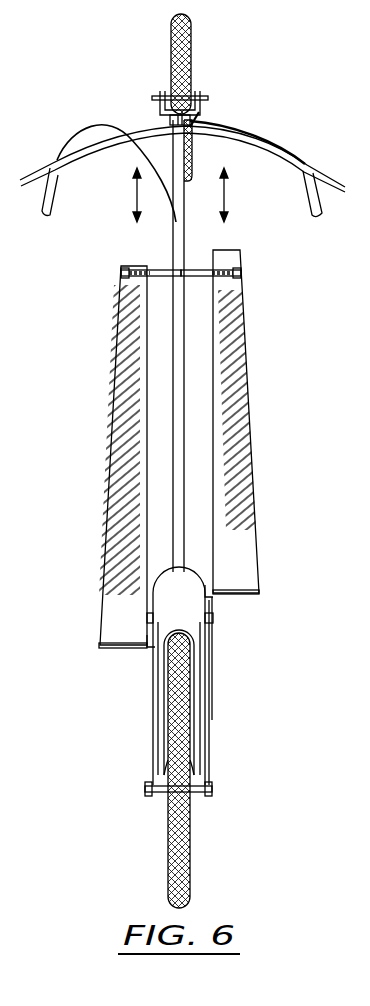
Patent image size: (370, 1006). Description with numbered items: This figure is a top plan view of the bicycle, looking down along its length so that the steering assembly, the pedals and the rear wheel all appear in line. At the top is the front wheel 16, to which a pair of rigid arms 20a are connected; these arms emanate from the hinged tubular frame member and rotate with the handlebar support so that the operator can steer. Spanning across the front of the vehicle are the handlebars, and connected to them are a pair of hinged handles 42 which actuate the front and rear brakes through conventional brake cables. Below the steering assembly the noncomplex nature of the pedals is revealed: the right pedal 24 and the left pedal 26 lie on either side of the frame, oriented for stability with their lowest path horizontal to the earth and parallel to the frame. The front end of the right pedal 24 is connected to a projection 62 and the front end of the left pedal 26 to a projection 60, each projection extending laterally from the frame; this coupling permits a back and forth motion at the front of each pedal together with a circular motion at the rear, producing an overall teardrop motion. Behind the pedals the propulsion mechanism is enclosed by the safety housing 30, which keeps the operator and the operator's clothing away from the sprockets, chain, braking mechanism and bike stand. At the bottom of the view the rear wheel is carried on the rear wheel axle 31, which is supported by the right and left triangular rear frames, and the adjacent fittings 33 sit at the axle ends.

The front wheel 16 is at (192, 24).
The rigid arms 20a is at (208, 103).
The hinged handles 42 is at (328, 177).
The projection 60 is at (163, 268).
The projection 62 is at (200, 264).
The right pedal 24 is at (233, 318).
The left pedal 26 is at (126, 338).
The safety housing 30 is at (208, 607).
The rear wheel axle 31 is at (210, 782).
The axle 33 is at (196, 792).